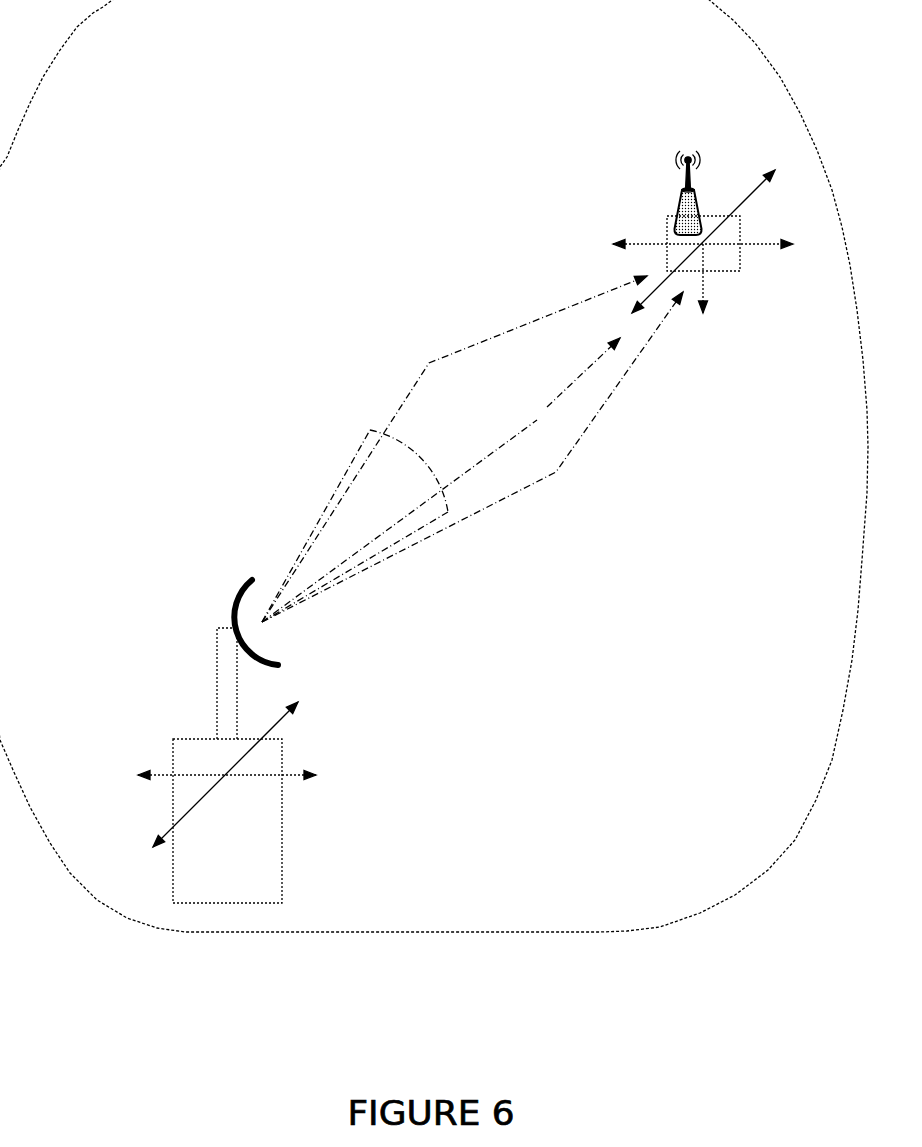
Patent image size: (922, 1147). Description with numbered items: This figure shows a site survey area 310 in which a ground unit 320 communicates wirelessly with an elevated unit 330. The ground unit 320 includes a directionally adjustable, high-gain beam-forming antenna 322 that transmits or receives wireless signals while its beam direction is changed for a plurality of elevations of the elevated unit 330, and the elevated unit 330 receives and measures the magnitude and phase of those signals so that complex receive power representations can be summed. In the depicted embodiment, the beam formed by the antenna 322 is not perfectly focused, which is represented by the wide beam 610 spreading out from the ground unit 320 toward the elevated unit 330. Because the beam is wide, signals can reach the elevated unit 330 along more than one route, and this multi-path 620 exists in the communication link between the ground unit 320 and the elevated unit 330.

The site survey area 310 is at (467, 73).
The ground unit 320 is at (211, 893).
The directionally adjustable beam-forming antenna 322 is at (228, 592).
The elevated unit 330 is at (573, 180).
The wide beam 610 is at (382, 660).
The multi-path 620 is at (620, 515).